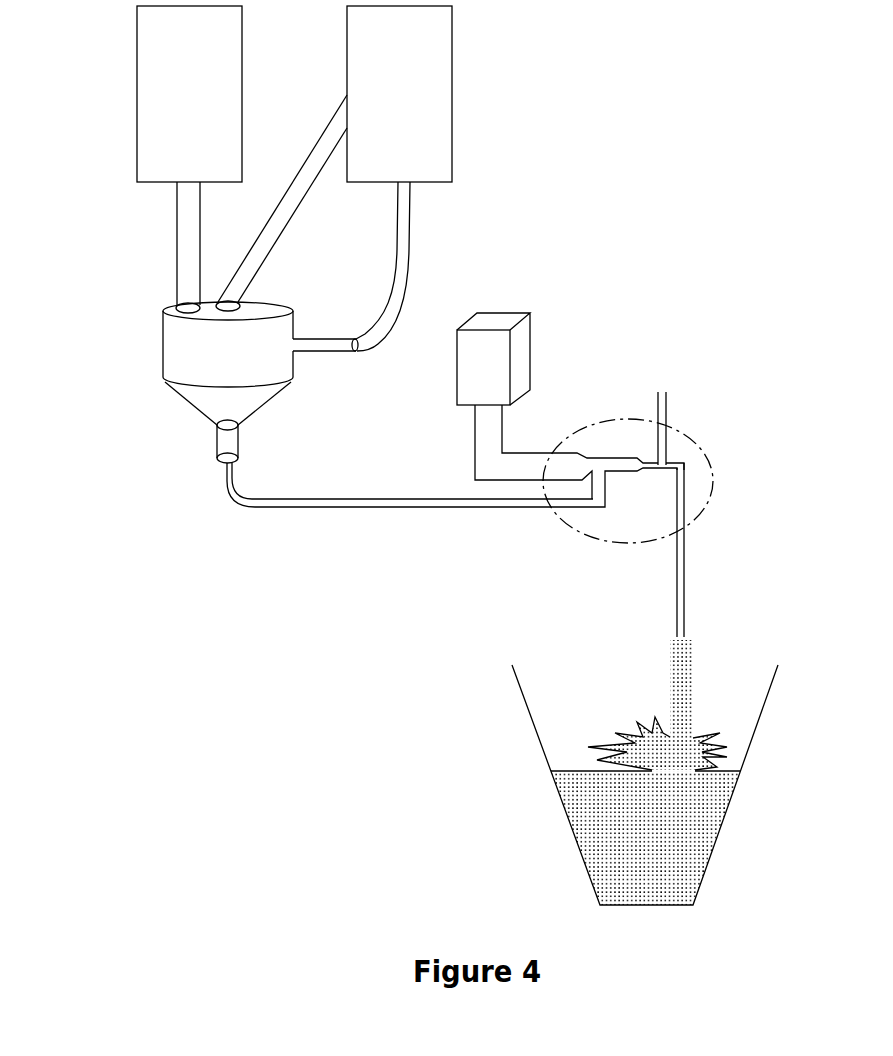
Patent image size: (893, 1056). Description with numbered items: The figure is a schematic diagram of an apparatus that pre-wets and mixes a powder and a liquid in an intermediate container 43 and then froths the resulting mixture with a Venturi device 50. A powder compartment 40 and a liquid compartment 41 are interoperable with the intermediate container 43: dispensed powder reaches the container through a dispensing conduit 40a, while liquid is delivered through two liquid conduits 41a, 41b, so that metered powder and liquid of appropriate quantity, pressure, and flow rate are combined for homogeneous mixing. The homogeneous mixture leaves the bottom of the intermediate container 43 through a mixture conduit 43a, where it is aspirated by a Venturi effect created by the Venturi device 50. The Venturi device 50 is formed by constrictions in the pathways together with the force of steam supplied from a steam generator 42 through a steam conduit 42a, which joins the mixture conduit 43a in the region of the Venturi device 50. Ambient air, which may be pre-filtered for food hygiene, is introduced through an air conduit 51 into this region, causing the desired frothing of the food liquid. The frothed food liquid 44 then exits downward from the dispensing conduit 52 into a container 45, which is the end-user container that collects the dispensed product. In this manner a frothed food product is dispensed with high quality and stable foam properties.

The powder compartment 40 is at (206, 106).
The liquid compartment 41 is at (414, 106).
The steam generator 42 is at (499, 379).
The intermediate container 43 is at (244, 364).
The dispensing conduit 40a is at (177, 250).
The liquid conduit 41a is at (300, 205).
The liquid conduit 41b is at (402, 287).
The steam conduit 42a is at (474, 438).
The mixture conduit 43a is at (245, 500).
The frothed food liquid 44 is at (680, 668).
The container 45 is at (535, 728).
The Venturi device 50 is at (685, 435).
The air conduit 51 is at (657, 400).
The dispensing conduit 52 is at (685, 570).